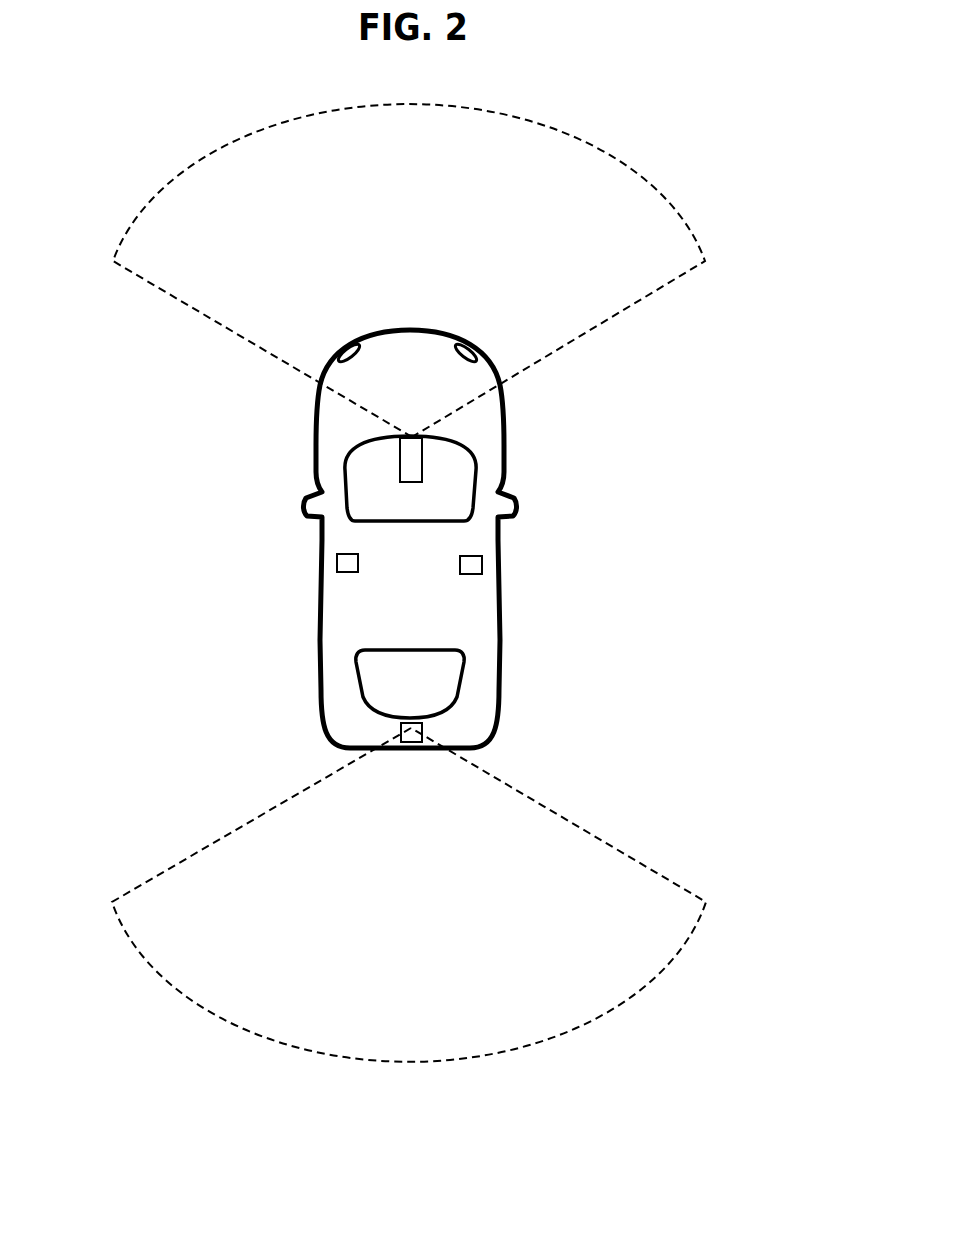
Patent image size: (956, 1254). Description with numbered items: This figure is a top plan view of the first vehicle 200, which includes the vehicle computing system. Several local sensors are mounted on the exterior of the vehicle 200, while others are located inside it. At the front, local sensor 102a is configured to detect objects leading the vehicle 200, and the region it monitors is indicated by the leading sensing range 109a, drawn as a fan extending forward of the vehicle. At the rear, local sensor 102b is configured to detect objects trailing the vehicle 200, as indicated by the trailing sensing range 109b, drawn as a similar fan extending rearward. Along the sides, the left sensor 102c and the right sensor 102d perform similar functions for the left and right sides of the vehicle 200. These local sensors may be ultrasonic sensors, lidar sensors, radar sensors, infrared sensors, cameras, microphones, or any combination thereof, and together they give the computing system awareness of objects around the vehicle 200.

The first vehicle 200 is at (696, 548).
The local sensor 102a is at (410, 462).
The local sensor 102b is at (411, 735).
The left sensor 102c is at (346, 562).
The right sensor 102d is at (472, 563).
The leading sensing range 109a is at (593, 330).
The trailing sensing range 109b is at (686, 888).